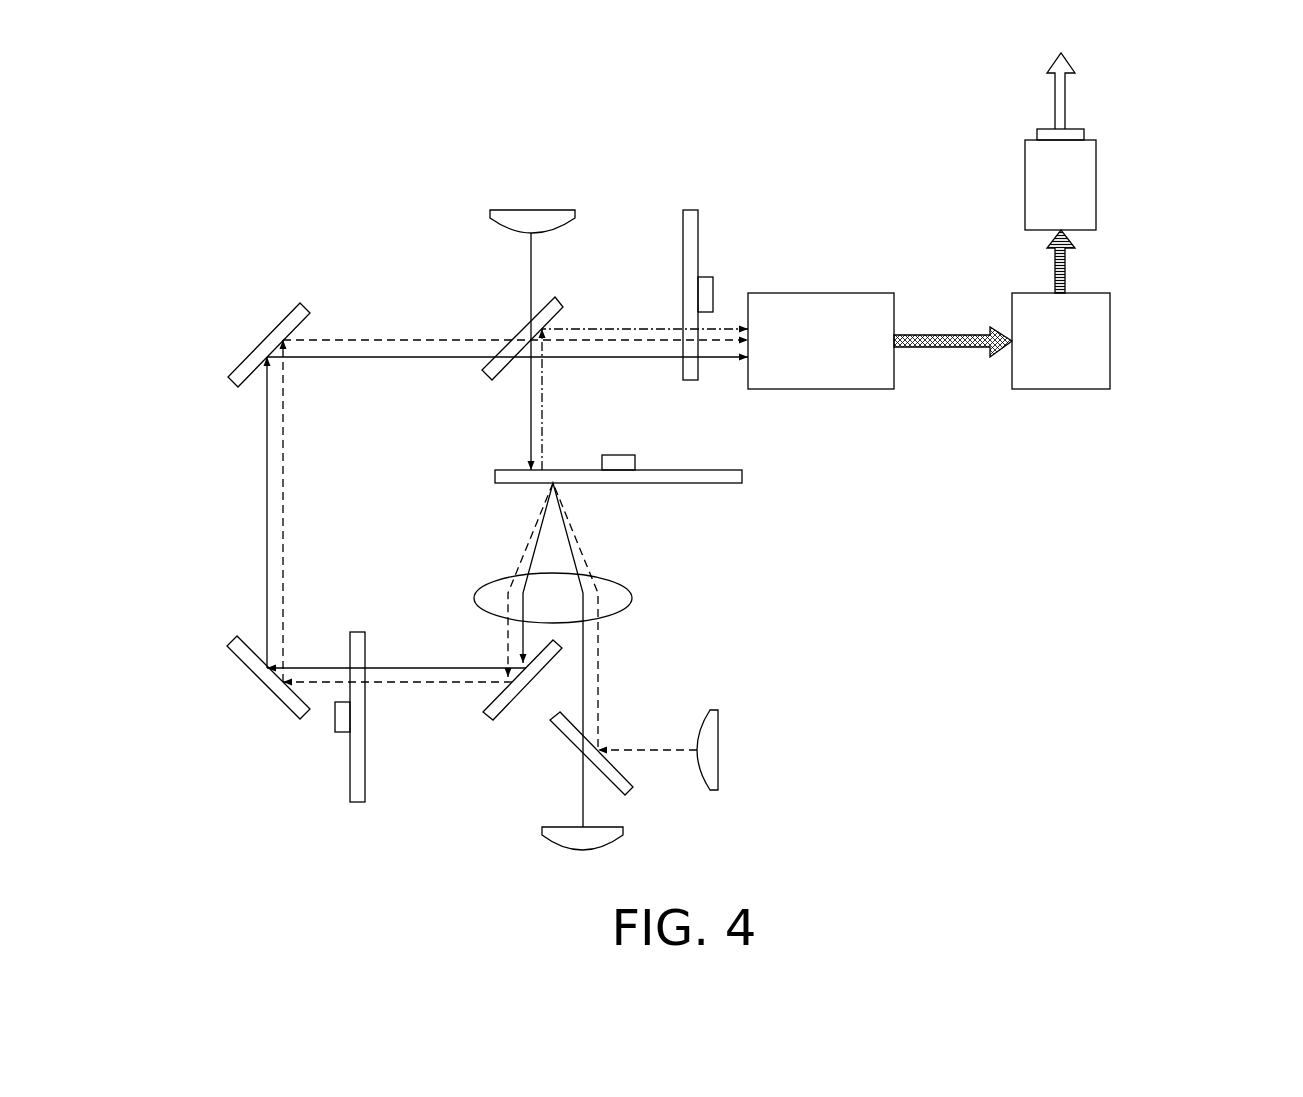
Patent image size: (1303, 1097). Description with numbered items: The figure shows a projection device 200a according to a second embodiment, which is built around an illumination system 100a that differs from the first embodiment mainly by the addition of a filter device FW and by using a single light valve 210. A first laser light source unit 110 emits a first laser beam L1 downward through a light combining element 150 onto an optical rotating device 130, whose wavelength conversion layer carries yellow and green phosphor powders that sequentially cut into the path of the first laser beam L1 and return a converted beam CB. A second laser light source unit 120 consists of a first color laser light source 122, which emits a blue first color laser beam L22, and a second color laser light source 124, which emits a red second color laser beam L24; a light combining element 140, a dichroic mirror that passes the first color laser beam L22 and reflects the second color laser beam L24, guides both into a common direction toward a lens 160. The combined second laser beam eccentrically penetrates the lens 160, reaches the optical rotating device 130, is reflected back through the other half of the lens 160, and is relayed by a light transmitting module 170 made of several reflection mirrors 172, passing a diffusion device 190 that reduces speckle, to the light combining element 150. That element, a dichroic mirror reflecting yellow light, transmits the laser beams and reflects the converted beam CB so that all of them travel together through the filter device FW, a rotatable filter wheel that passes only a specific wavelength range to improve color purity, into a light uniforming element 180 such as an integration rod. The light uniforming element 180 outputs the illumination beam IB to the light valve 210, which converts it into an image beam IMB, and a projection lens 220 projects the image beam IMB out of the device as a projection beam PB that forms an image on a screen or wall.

The illumination system 100a is at (830, 220).
The projection device 200a is at (1270, 827).
The first laser light source unit 110 is at (530, 218).
The second laser light source unit 120 is at (701, 782).
The first color laser light source 122 is at (613, 835).
The second color laser light source 124 is at (747, 750).
The optical rotating device 130 is at (690, 477).
The light combining element 140 is at (568, 733).
The light combining element 150 is at (485, 377).
The lens 160 is at (623, 602).
The light transmitting module 170 is at (245, 317).
The reflection mirrors 172 is at (237, 377).
The light uniforming element 180 is at (831, 381).
The diffusion device 190 is at (357, 803).
The light valve 210 is at (1065, 381).
The projection lens 220 is at (1083, 182).
The first laser beam L1 is at (531, 273).
The first color laser beam L22 is at (267, 503).
The second color laser beam L24 is at (283, 545).
The converted beam CB is at (542, 405).
The filter device FW is at (692, 210).
The illumination beam IB is at (946, 348).
The image beam IMB is at (1068, 270).
The projection beam PB is at (1068, 98).